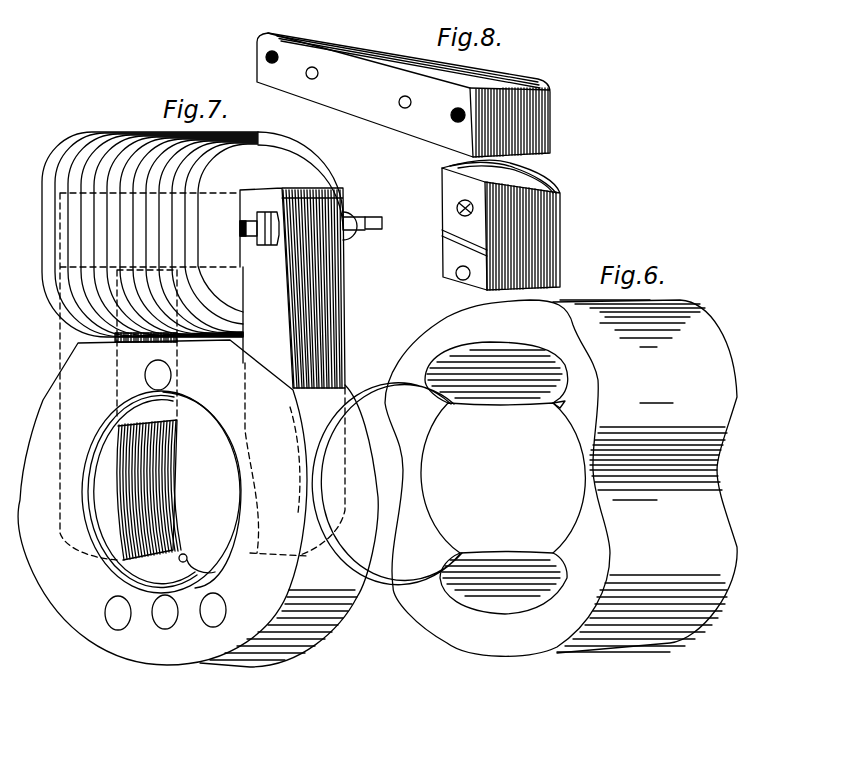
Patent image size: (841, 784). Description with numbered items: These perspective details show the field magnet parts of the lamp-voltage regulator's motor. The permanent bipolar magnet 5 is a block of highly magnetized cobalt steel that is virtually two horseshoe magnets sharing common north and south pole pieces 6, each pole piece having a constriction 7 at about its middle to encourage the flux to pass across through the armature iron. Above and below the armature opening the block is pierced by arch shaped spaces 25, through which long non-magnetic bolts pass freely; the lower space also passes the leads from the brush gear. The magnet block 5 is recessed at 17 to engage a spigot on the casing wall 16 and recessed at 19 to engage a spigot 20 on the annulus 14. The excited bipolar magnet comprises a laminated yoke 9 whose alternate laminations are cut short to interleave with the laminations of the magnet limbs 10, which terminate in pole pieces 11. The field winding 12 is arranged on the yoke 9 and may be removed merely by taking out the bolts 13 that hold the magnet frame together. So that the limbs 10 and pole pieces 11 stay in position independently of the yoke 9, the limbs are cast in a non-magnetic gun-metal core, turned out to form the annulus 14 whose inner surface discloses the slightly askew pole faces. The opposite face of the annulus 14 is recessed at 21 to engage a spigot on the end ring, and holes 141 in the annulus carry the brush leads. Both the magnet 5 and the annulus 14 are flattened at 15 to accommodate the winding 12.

In FIG. 6, the permanent bipolar magnet 5 is at (561, 478).
In FIG. 6, the pole pieces 6 is at (578, 469).
In FIG. 6, the constriction 7 is at (408, 480).
In FIG. 8, the laminated yoke 9 is at (457, 92).
In FIG. 7, the laminated yoke 9 is at (77, 195).
In FIG. 8, the magnet limbs 10 is at (557, 200).
In FIG. 7, the magnet limbs 10 is at (75, 340).
In FIG. 7, the pole pieces 11 is at (133, 440).
In FIG. 7, the field winding 12 is at (117, 133).
In FIG. 7, the bolts 13 is at (240, 228).
In FIG. 7, the annulus 14 is at (198, 503).
In FIG. 7, the holes 141 is at (217, 608).
In FIG. 7, the flattened portion 15 is at (141, 343).
In FIG. 6, the flattened portion 15 is at (473, 320).
In FIG. 8, the casing wall 16 is at (518, 252).
In FIG. 6, the recess 17 is at (560, 399).
In FIG. 6, the recess 19 is at (433, 523).
In FIG. 7, the spigot 20 is at (187, 556).
In FIG. 7, the recess 21 is at (120, 573).
In FIG. 6, the arch shaped spaces 25 is at (503, 399).